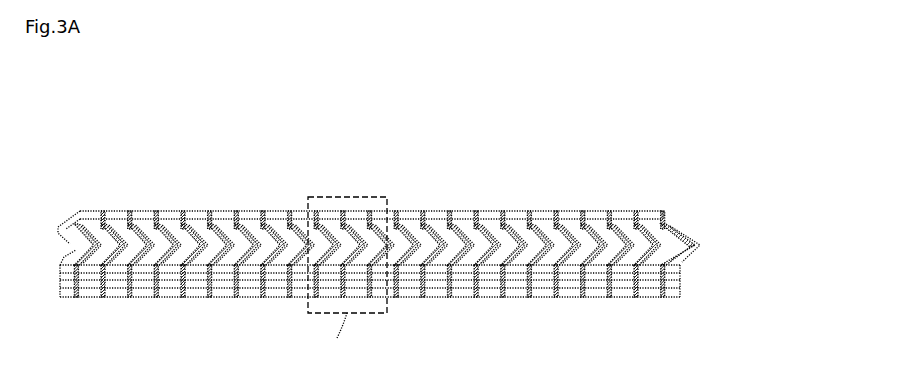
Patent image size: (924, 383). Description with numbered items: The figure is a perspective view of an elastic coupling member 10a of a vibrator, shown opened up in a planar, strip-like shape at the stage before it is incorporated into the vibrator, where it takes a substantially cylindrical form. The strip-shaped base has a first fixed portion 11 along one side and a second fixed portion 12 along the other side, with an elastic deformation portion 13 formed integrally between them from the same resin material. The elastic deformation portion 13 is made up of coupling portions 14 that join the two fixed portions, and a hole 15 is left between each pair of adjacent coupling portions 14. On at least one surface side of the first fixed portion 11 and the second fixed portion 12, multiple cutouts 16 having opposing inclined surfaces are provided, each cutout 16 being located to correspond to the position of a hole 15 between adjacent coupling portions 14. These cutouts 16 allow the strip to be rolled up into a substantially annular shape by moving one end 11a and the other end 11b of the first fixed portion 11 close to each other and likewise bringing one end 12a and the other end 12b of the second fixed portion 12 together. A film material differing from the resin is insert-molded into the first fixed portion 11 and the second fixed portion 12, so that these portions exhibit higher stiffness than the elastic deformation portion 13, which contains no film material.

The elastic coupling member 10a is at (148, 197).
The first fixed portion 11 is at (517, 298).
The one end of the first fixed portion 11a is at (680, 299).
The other end of the first fixed portion 11b is at (60, 290).
The second fixed portion 12 is at (513, 212).
The one end of the second fixed portion 12a is at (666, 226).
The other end of the second fixed portion 12b is at (78, 222).
The elastic deformation portion 13 is at (770, 215).
The coupling portions 14 is at (693, 259).
The hole 15 is at (760, 231).
The cutout 16 is at (394, 183).